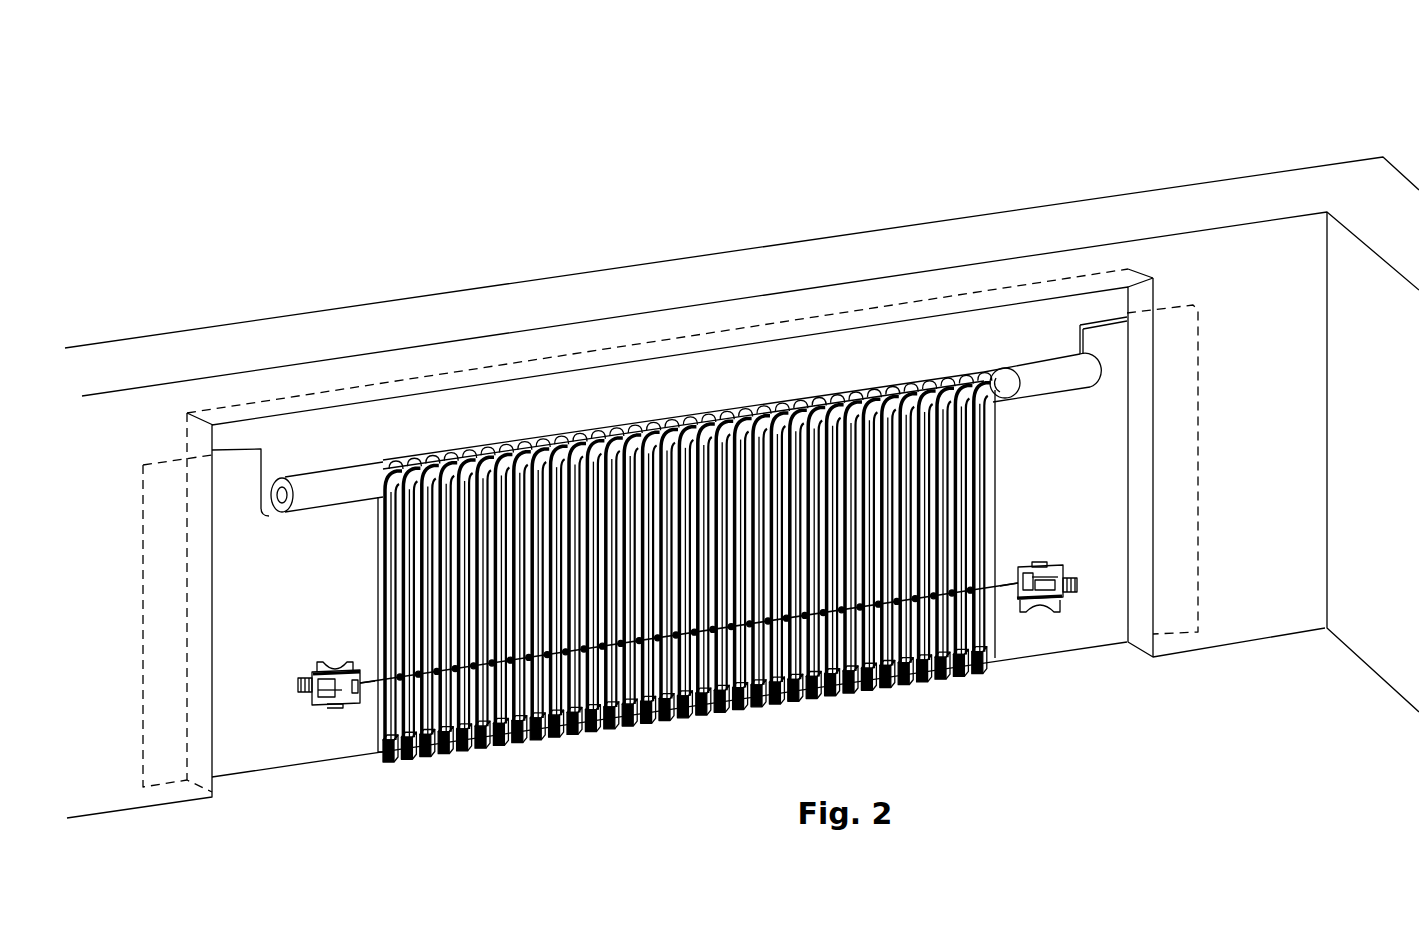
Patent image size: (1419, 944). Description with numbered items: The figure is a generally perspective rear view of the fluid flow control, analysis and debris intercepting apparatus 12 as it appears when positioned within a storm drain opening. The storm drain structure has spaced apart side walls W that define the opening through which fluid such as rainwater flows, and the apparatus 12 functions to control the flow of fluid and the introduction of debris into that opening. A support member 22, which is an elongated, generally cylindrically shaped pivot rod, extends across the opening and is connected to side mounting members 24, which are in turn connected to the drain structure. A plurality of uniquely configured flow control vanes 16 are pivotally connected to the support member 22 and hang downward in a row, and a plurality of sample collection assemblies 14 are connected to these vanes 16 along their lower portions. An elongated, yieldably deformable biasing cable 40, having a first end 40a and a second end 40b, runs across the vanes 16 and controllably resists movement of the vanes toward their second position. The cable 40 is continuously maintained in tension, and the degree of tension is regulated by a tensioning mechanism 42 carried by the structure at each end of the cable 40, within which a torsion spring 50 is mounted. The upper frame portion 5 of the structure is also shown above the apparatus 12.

The housing frame 5 is at (1224, 180).
The fluid flow control and debris intercepting apparatus 12 is at (747, 487).
The sample collection assemblies 14 is at (507, 752).
The flow control vanes 16 is at (432, 452).
The support member 22 is at (1008, 370).
The side mounting members 24 is at (278, 735).
The biasing cable 40 is at (722, 715).
The first end 40a is at (1002, 563).
The second end 40b is at (357, 663).
The tensioning mechanism 42 is at (290, 653).
The torsion spring 50 is at (700, 394).
The side walls W is at (1375, 630).